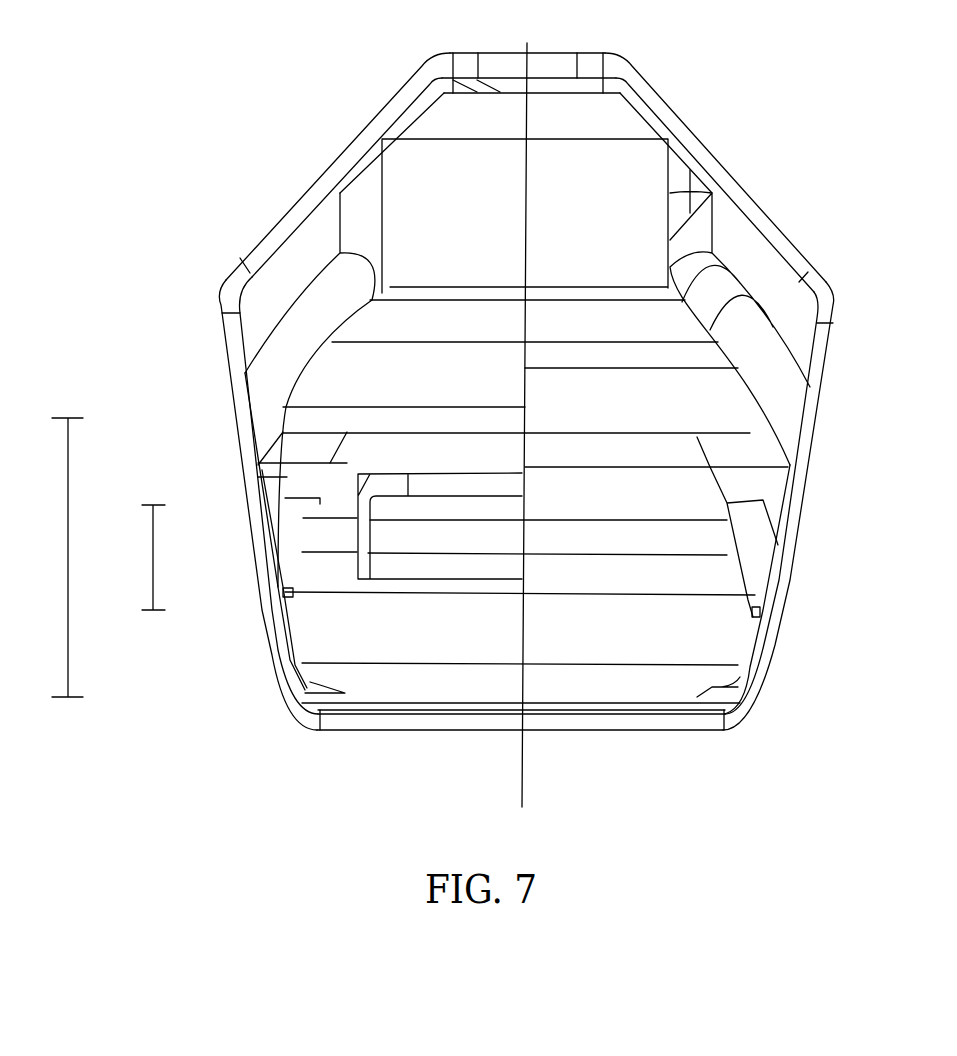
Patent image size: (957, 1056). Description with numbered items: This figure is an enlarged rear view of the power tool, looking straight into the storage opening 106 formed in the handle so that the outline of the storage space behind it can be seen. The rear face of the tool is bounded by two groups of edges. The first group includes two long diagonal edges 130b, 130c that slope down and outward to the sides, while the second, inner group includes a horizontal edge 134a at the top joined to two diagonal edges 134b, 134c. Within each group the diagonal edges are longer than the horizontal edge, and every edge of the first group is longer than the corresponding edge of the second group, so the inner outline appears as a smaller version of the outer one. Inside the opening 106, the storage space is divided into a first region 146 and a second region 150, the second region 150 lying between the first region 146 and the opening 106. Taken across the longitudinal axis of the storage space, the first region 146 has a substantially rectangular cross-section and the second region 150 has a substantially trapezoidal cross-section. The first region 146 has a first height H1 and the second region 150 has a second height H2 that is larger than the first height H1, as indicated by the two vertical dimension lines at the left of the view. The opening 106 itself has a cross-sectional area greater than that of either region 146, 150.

The storage opening 106 is at (433, 228).
The diagonal edge 130b is at (224, 346).
The diagonal edge 130c is at (793, 567).
The horizontal edge 134a is at (570, 53).
The diagonal edge 134b is at (395, 100).
The diagonal edge 134c is at (727, 170).
The first region 146 is at (392, 508).
The second region 150 is at (696, 621).
The first height H1 is at (153, 612).
The second height H2 is at (58, 416).